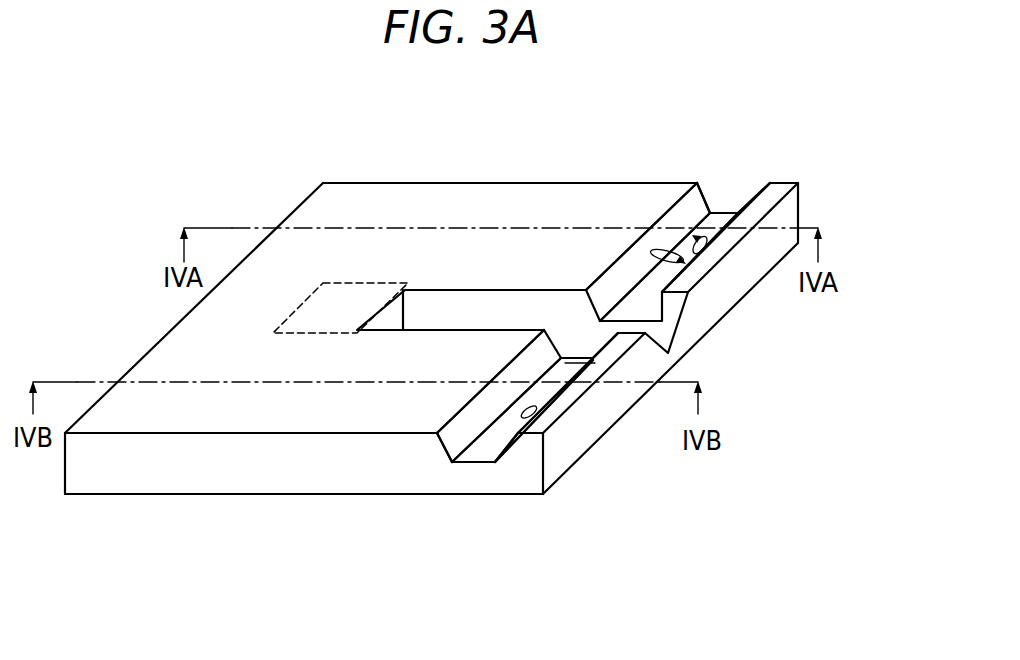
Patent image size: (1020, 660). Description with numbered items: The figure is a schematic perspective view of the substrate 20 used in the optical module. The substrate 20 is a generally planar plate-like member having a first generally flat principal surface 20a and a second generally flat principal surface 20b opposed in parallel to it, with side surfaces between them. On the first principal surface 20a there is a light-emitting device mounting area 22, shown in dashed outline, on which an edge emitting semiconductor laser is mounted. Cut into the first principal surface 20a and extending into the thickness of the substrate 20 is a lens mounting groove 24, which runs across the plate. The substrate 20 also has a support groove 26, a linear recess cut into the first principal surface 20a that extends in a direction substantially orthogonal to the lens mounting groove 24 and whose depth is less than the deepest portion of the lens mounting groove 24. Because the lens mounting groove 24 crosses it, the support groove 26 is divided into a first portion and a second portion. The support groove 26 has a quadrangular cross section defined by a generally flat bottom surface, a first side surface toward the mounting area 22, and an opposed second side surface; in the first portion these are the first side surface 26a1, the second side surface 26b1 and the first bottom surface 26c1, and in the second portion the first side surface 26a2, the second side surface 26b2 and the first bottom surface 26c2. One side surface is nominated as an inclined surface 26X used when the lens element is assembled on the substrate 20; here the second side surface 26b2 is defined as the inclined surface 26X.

The substrate 20 is at (817, 82).
The first principal surface 20a is at (160, 407).
The second principal surface 20b is at (295, 494).
The light-emitting device mounting area 22 is at (300, 307).
The lens mounting groove 24 is at (470, 300).
The support groove 26 is at (723, 188).
The first side surface 26a1 is at (695, 182).
The second side surface 26b1 is at (697, 240).
The first bottom surface 26c1 is at (712, 256).
The first side surface 26a2 is at (450, 440).
The second side surface 26b2 is at (582, 443).
The inclined surface 26X is at (534, 413).
The first bottom surface 26c2 is at (485, 450).